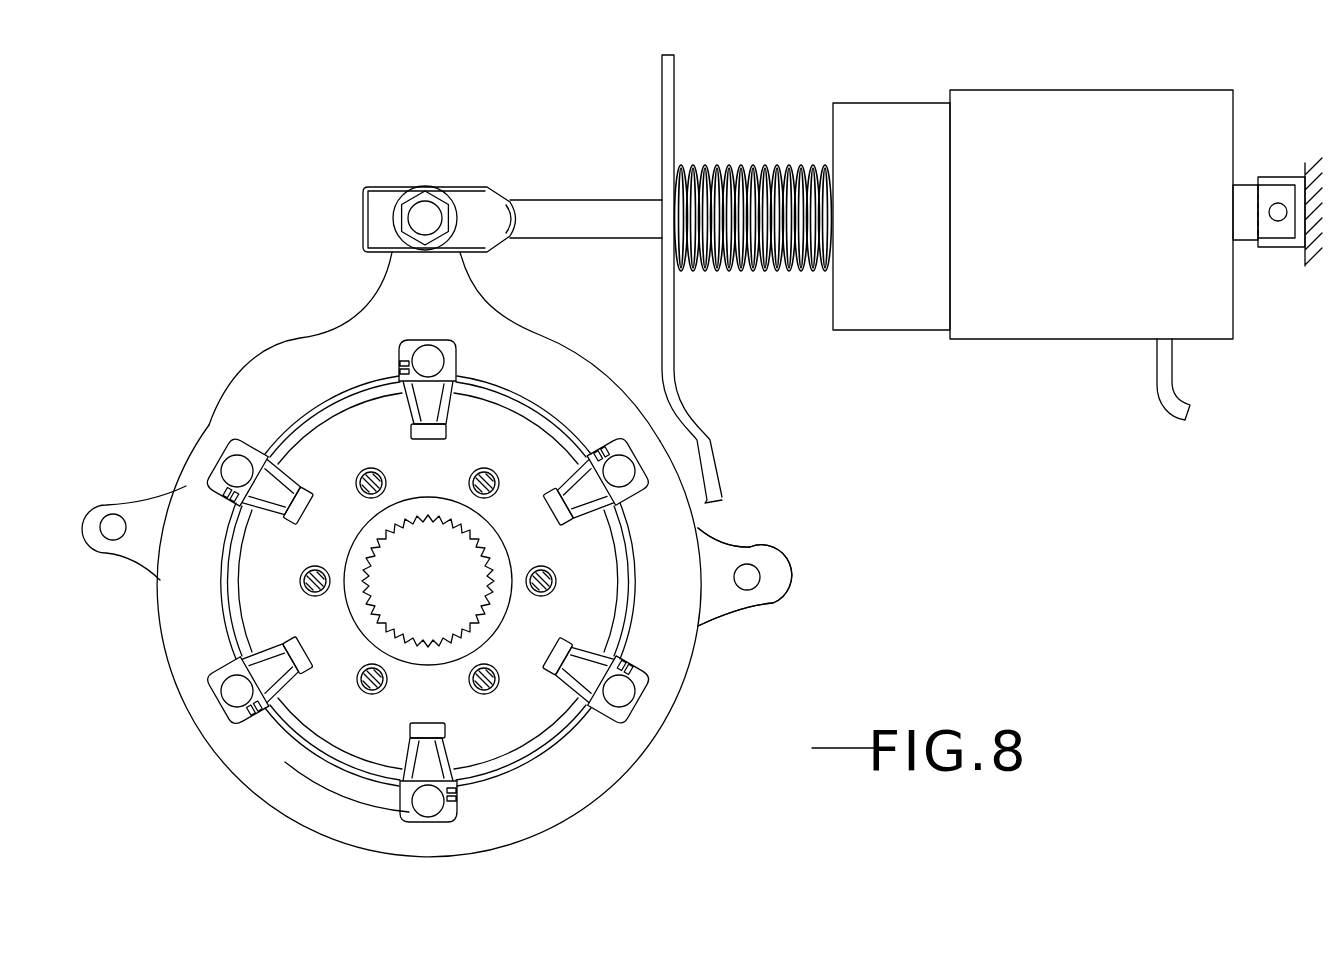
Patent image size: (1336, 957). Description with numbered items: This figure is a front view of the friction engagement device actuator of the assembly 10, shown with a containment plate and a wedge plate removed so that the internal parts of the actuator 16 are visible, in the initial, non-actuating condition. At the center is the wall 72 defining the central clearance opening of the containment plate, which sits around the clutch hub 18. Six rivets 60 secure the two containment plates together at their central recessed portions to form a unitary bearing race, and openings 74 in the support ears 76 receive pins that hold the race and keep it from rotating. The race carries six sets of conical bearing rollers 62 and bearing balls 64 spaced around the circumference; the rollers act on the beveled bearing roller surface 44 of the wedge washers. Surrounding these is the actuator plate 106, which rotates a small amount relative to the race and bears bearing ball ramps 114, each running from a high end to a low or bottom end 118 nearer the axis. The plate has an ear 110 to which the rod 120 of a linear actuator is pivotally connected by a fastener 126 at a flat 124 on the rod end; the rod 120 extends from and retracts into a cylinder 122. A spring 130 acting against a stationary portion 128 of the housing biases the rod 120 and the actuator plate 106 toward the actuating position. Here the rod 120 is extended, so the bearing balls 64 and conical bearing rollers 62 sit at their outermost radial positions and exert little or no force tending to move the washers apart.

The assembly 10 is at (702, 468).
The actuator 16 is at (461, 556).
The clutch hub 18 is at (412, 640).
The beveled bearing roller surface 44 is at (428, 622).
The rivets 60 is at (485, 482).
The conical bearing rollers 62 is at (270, 478).
The bearing balls 64 is at (238, 468).
The wall 72 is at (434, 700).
The openings 74 is at (755, 575).
The support ears 76 is at (776, 600).
The actuator plate 106 is at (520, 355).
The ear 110 is at (458, 177).
The bearing ball ramps 114 is at (372, 357).
The low or bottom end 118 is at (347, 415).
The rod 120 is at (580, 215).
The cylinder 122 is at (1055, 305).
The flat 124 is at (383, 208).
The fastener 126 is at (425, 218).
The stationary portion 128 is at (673, 103).
The spring 130 is at (730, 170).